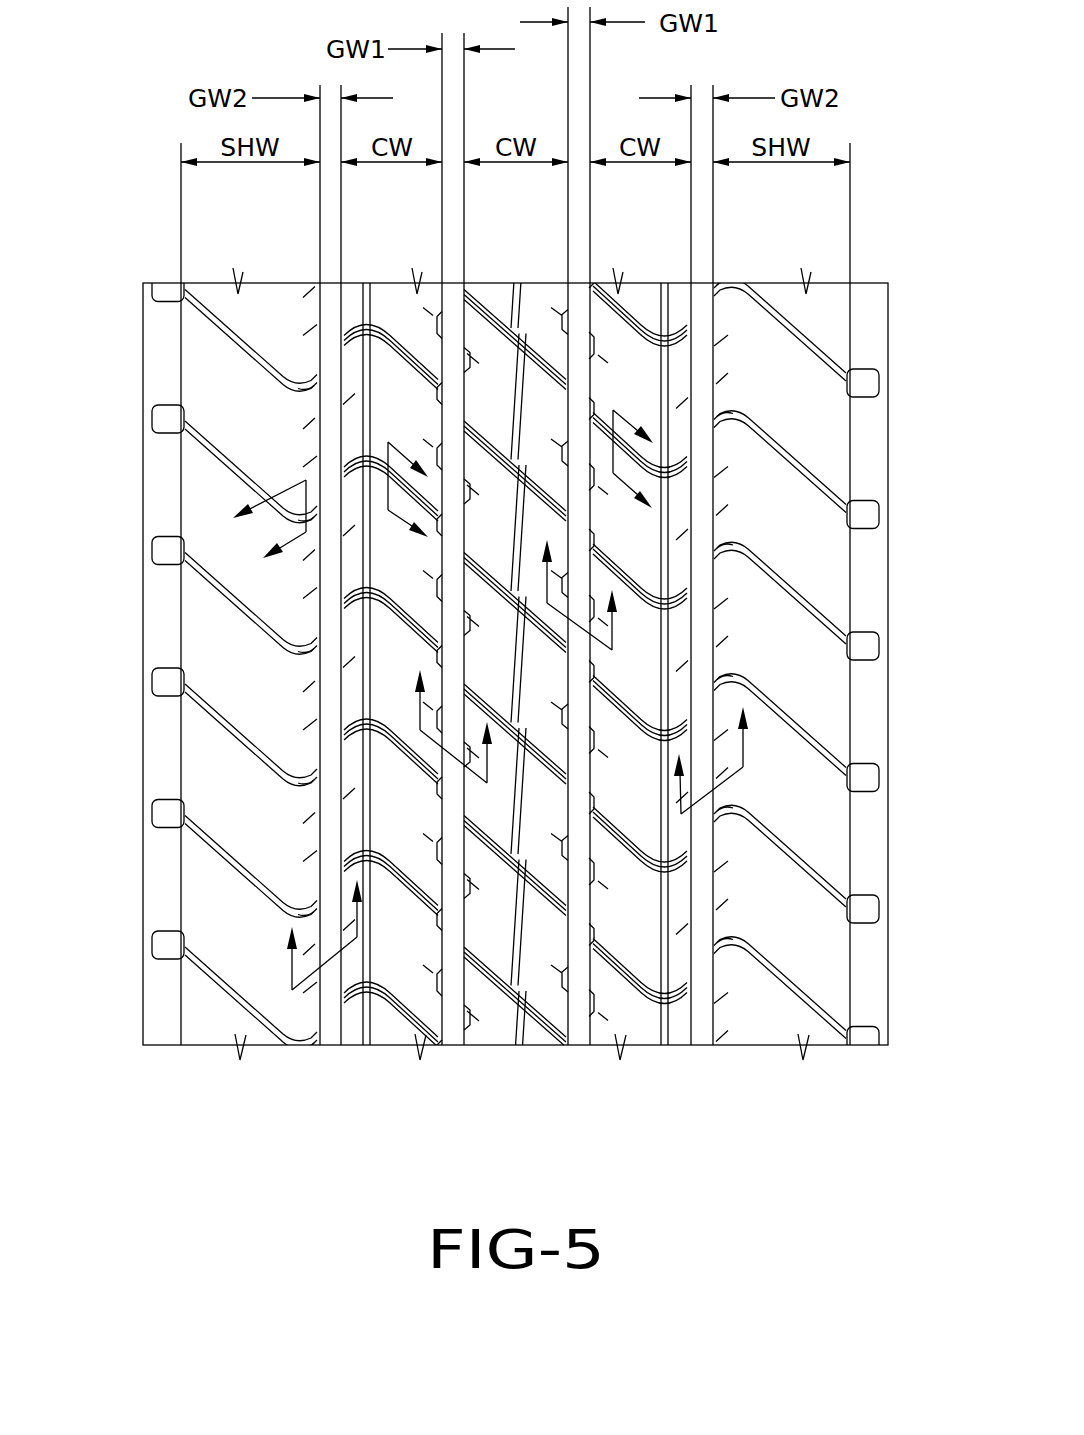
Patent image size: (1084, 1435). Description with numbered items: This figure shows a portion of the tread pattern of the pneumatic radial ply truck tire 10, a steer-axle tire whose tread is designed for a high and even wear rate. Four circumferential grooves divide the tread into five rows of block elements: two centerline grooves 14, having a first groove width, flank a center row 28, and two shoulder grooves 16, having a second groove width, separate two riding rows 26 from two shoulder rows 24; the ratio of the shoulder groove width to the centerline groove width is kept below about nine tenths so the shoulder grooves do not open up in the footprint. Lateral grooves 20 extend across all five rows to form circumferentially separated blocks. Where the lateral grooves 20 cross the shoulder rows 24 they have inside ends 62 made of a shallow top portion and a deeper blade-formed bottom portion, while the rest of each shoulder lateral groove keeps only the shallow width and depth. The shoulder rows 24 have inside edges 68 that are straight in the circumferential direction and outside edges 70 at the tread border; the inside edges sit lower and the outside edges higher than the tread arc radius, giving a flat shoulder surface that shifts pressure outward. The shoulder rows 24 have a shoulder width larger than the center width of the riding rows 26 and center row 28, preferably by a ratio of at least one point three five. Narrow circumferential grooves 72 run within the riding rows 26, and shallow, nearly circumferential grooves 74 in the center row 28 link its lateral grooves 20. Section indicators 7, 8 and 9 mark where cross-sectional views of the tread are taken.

The shoulder rows 24 is at (272, 322).
The riding rows 26 is at (402, 322).
The center row 28 is at (545, 323).
The centerline grooves 14 is at (456, 1050).
The shoulder grooves 16 is at (331, 1050).
The lateral grooves 20 is at (415, 758).
The inside ends 62 is at (299, 786).
The inside edges 68 is at (317, 435).
The outside edges 70 is at (179, 648).
The circumferential grooves 72 is at (372, 618).
The nearly circumferential grooves 74 is at (498, 303).
The section line 7- 7 is at (513, 657).
The section line 8- 8 is at (513, 848).
The section line 9- 9 is at (520, 478).
The pneumatic radial ply truck tire 10 is at (253, 520).